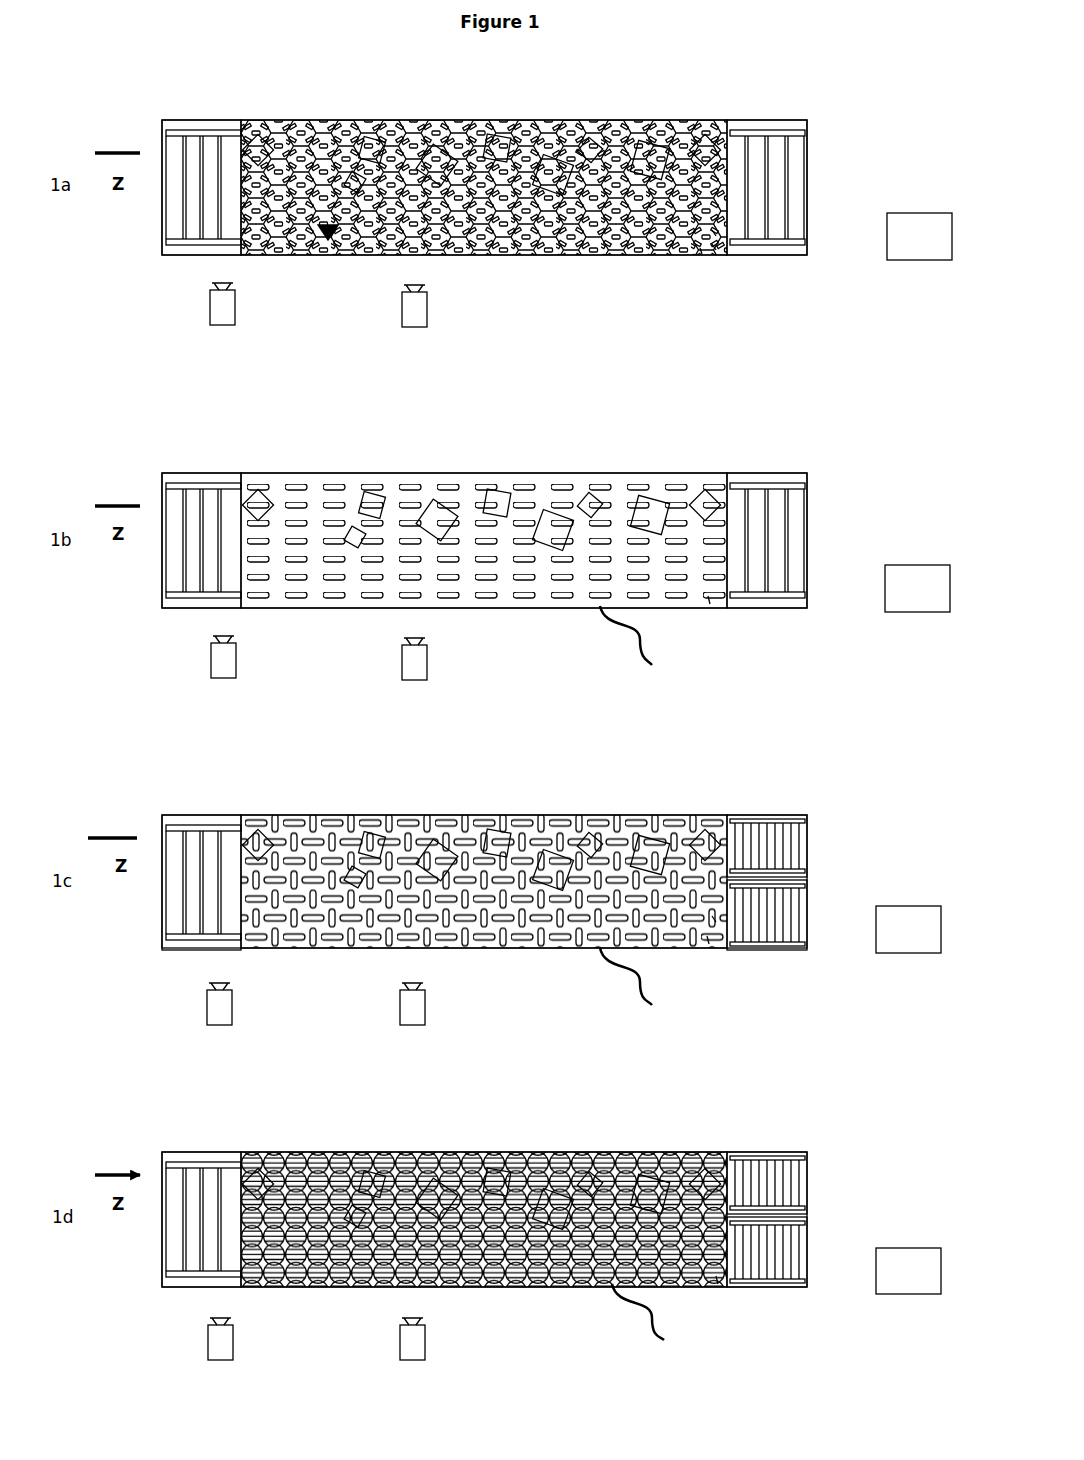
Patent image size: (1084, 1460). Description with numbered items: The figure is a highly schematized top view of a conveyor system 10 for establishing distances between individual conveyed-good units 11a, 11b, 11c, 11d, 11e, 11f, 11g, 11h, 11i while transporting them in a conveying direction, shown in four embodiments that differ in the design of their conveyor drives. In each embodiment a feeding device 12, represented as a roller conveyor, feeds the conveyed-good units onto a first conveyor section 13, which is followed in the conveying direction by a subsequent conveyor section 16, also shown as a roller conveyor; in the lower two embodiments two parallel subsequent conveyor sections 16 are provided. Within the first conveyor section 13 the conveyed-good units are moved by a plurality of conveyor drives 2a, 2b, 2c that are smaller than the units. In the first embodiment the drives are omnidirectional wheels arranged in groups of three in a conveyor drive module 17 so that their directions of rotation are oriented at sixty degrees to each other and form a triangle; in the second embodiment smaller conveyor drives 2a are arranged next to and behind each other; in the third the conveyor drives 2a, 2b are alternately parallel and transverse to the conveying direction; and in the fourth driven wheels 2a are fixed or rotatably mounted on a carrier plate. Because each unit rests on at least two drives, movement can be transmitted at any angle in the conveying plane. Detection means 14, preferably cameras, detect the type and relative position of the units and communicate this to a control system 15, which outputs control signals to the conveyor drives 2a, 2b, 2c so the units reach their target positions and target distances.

The conveyor drive 2a is at (700, 255).
The conveyor drive 2b is at (713, 232).
The conveyor drive 2c is at (714, 246).
The conveyor system 10 is at (490, 275).
The conveyed-good unit 11a is at (258, 150).
The conveyed-good unit 11b is at (355, 182).
The conveyed-good unit 11c is at (372, 150).
The conveyed-good unit 11d is at (437, 165).
The conveyed-good unit 11e is at (497, 148).
The conveyed-good unit 11f is at (553, 175).
The conveyed-good unit 11g is at (590, 150).
The conveyed-good unit 11h is at (650, 160).
The conveyed-good unit 11i is at (705, 150).
The feeding device 12 is at (160, 100).
The first conveyor section 13 is at (643, 983).
The detection means 14 is at (180, 293).
The control system 15 is at (914, 753).
The subsequent conveyor section 16 is at (818, 185).
The conveyor drive module 17 is at (326, 245).